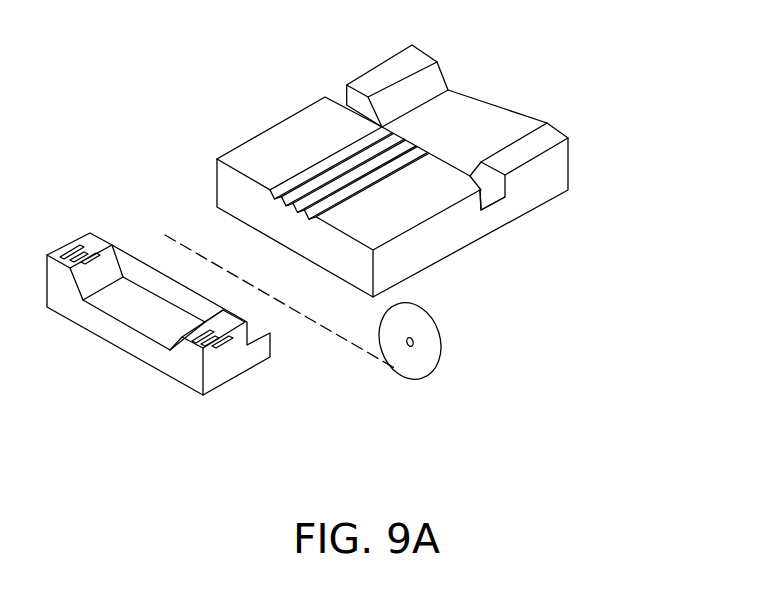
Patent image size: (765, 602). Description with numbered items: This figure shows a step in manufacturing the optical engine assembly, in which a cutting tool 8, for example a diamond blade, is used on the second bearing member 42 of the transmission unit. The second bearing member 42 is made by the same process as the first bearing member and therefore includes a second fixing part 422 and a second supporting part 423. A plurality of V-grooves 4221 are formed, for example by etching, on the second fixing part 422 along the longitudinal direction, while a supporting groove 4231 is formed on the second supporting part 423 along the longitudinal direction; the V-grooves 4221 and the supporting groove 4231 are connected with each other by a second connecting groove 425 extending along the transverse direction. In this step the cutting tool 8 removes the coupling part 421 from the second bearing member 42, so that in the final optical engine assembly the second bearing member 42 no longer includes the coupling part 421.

The second bearing member 42 is at (592, 107).
The coupling part 421 is at (233, 354).
The second fixing part 422 is at (430, 245).
The V-grooves 4221 is at (312, 173).
The second supporting part 423 is at (552, 173).
The supporting groove 4231 is at (488, 132).
The second connecting groove 425 is at (487, 197).
The cutting tool 8 is at (443, 352).